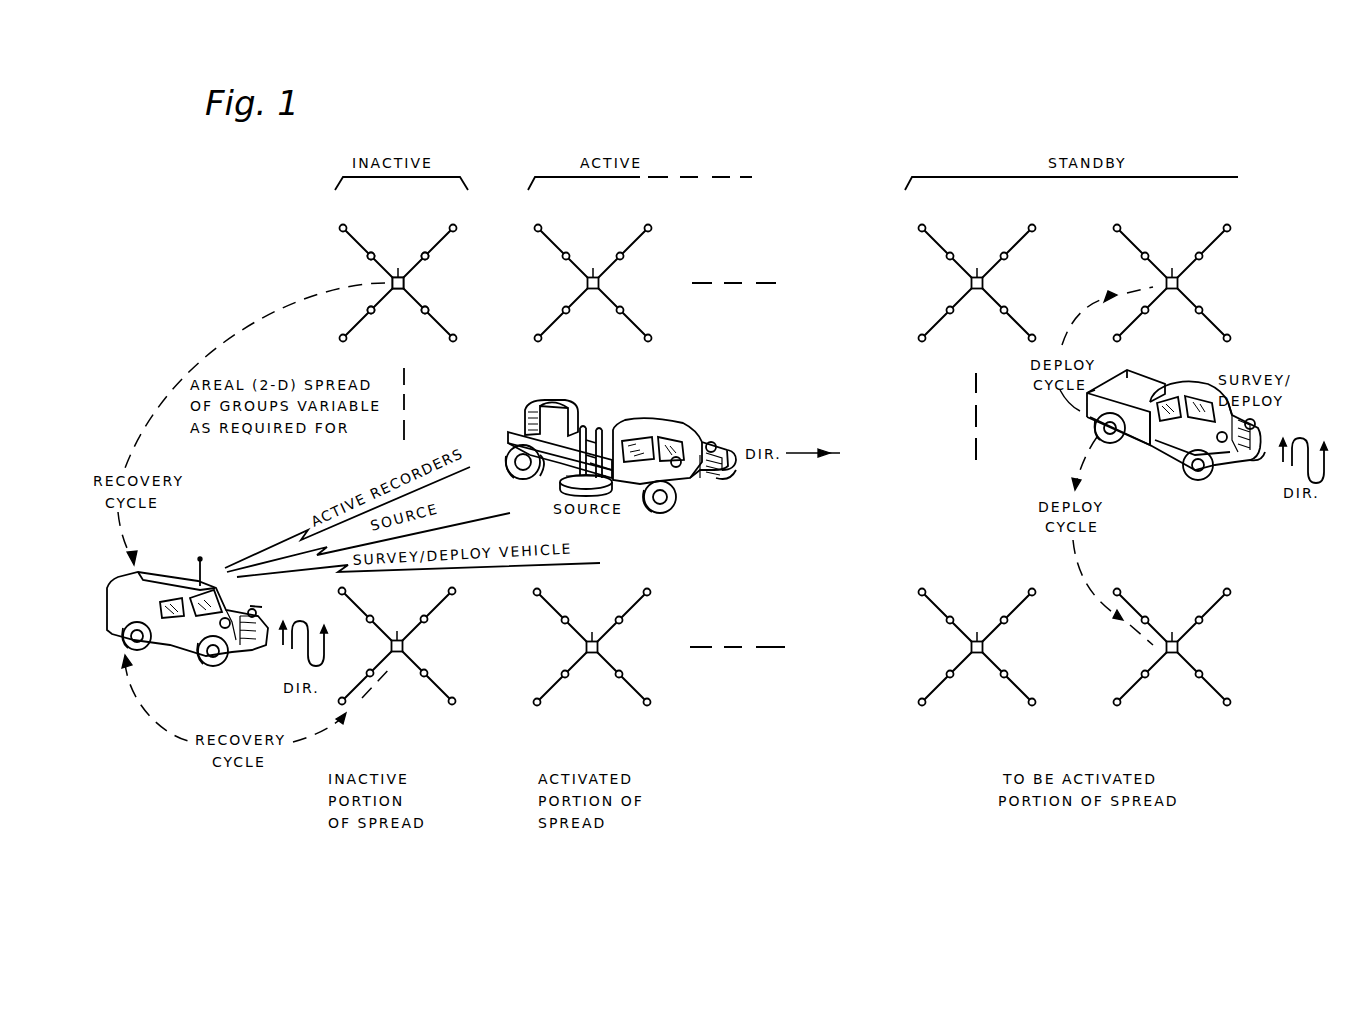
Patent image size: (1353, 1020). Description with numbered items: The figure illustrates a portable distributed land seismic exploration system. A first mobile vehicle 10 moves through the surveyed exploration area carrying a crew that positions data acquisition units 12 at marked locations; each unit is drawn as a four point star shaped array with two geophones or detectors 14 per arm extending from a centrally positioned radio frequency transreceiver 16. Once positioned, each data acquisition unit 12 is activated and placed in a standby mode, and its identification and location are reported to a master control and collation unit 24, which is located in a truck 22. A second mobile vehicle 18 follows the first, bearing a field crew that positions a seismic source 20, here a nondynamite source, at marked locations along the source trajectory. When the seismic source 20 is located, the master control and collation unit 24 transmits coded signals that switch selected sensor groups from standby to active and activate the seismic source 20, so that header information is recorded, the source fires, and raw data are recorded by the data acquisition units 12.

The first mobile vehicle 10 is at (1187, 388).
The data acquisition unit 12 is at (407, 238).
The geophones 14 is at (428, 312).
The radio frequency transreceiver 16 is at (405, 283).
The second mobile vehicle 18 is at (668, 424).
The seismic source 20 is at (560, 492).
The truck 22 is at (157, 578).
The master control and collation unit 24 is at (203, 564).